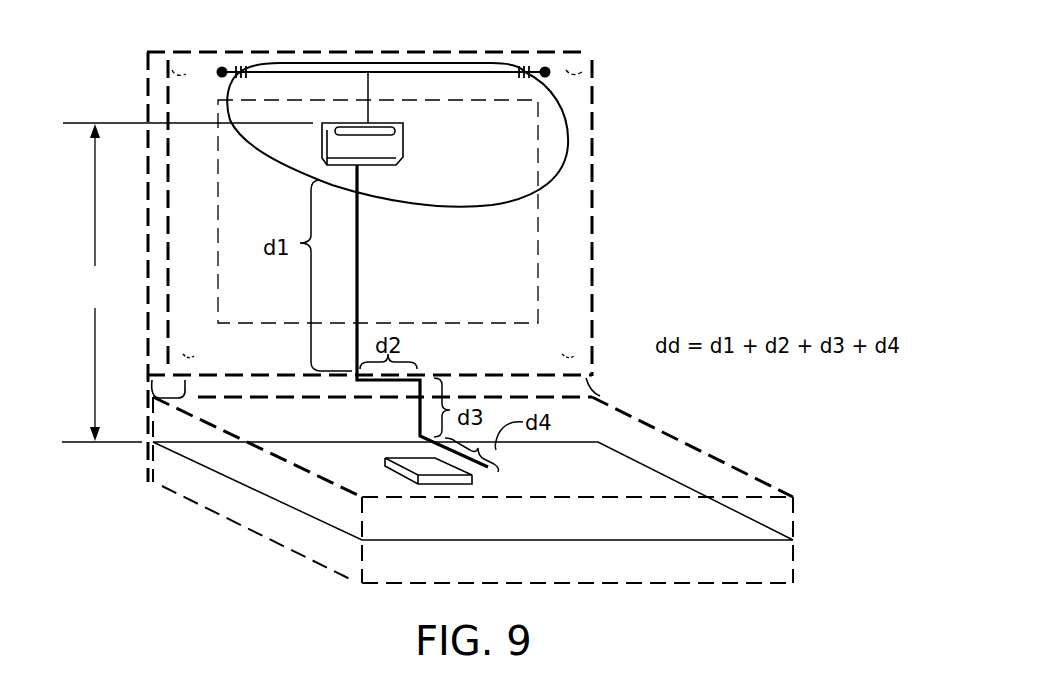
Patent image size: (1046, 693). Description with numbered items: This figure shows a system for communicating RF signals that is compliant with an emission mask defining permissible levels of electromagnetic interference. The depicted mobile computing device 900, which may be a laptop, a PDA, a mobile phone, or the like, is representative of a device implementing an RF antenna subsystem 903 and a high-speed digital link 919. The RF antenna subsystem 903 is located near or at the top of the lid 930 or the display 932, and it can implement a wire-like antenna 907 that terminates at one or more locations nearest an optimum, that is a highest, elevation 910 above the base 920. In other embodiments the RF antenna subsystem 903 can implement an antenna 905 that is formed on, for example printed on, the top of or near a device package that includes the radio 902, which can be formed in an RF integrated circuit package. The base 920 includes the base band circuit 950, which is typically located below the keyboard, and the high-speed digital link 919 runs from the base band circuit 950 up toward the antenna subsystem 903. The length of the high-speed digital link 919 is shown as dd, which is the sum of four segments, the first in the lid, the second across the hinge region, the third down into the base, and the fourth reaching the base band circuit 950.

The lid 930 is at (128, 28).
The mobile computing device 900 is at (593, 76).
The wire-like antenna 907 is at (445, 72).
The RF antenna subsystem 903 is at (569, 145).
The radio 902 is at (403, 158).
The antenna 905 is at (396, 131).
The display 932 is at (539, 255).
The high-speed digital link 919 is at (359, 252).
The elevation 910 is at (94, 203).
The base 920 is at (794, 540).
The base band circuit 950 is at (474, 480).